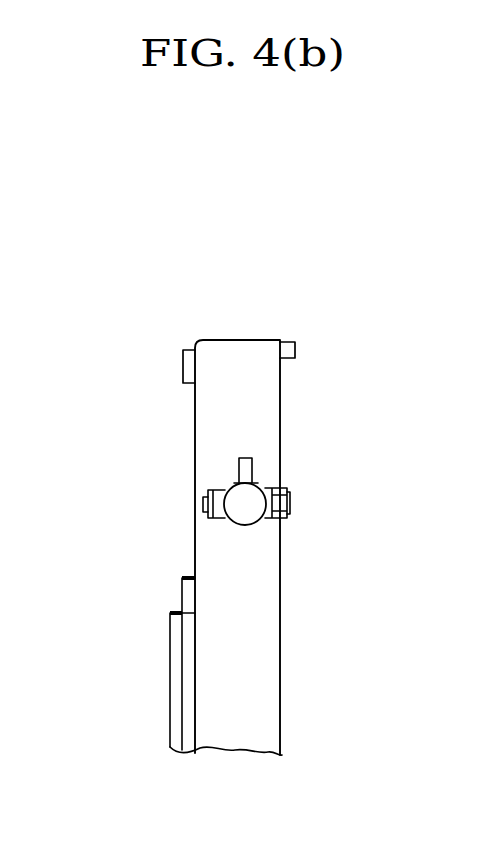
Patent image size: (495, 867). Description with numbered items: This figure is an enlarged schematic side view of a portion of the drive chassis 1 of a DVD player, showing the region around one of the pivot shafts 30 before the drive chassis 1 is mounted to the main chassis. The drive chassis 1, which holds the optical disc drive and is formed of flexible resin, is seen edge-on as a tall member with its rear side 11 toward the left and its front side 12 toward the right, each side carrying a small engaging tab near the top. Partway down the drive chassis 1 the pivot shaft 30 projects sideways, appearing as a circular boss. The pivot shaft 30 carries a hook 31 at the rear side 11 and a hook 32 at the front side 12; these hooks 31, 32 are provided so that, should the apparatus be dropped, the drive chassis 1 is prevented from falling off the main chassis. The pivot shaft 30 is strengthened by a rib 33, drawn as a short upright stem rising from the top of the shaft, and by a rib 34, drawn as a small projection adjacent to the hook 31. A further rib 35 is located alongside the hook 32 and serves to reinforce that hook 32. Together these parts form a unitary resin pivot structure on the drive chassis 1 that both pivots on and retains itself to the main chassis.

The drive chassis 1 is at (207, 327).
The rear face of the drive chassis 11 is at (194, 412).
The front face of the drive chassis 12 is at (282, 382).
The pivot shaft 30 is at (245, 509).
The hook 31 is at (212, 520).
The hook 32 is at (287, 526).
The rib 33 is at (254, 470).
The rib 34 is at (200, 495).
The rib 35 is at (289, 490).